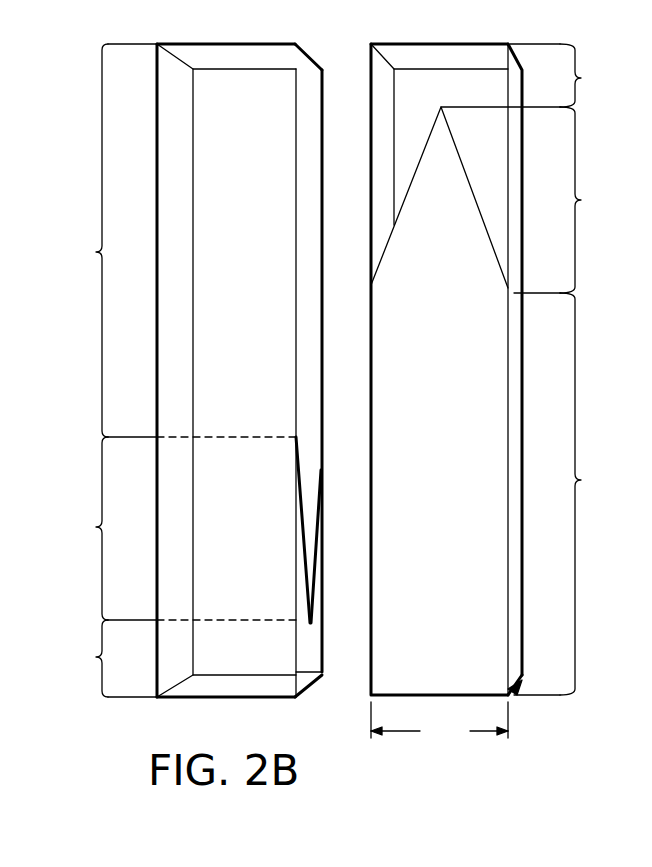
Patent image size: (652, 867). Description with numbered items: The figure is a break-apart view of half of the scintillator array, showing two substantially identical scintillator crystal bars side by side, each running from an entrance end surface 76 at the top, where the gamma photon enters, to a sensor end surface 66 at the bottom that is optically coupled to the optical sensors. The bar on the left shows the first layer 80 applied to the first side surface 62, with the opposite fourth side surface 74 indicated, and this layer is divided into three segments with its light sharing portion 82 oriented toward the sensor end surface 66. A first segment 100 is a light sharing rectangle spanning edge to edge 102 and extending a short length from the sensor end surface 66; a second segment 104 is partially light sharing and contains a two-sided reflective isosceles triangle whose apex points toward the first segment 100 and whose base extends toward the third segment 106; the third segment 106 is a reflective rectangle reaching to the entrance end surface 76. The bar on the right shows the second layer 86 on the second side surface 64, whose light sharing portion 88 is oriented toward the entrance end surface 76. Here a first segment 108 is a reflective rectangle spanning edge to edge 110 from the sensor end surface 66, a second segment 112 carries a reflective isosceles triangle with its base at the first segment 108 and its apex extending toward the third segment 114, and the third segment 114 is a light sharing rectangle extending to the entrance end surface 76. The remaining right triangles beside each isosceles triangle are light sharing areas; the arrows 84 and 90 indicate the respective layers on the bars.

The first side surface 62 is at (302, 651).
The second side surface 64 is at (453, 500).
The sensor end surface 66 is at (223, 680).
The fourth side surface 74 is at (173, 632).
The entrance end surface 76 is at (238, 55).
The first layer 80 is at (308, 689).
The light sharing portion 82 is at (300, 632).
The slit edge 84 is at (292, 380).
The second layer 86 is at (370, 327).
The light sharing portion 88 is at (408, 142).
The flap fold direction 90 is at (448, 237).
The first segment 100 is at (81, 658).
The edge to edge 102 is at (304, 32).
The second segment 104 is at (81, 528).
The third segment 106 is at (106, 370).
The first segment 108 is at (572, 494).
The edge to edge 110 is at (439, 723).
The second segment 112 is at (572, 200).
The third segment 114 is at (535, 75).